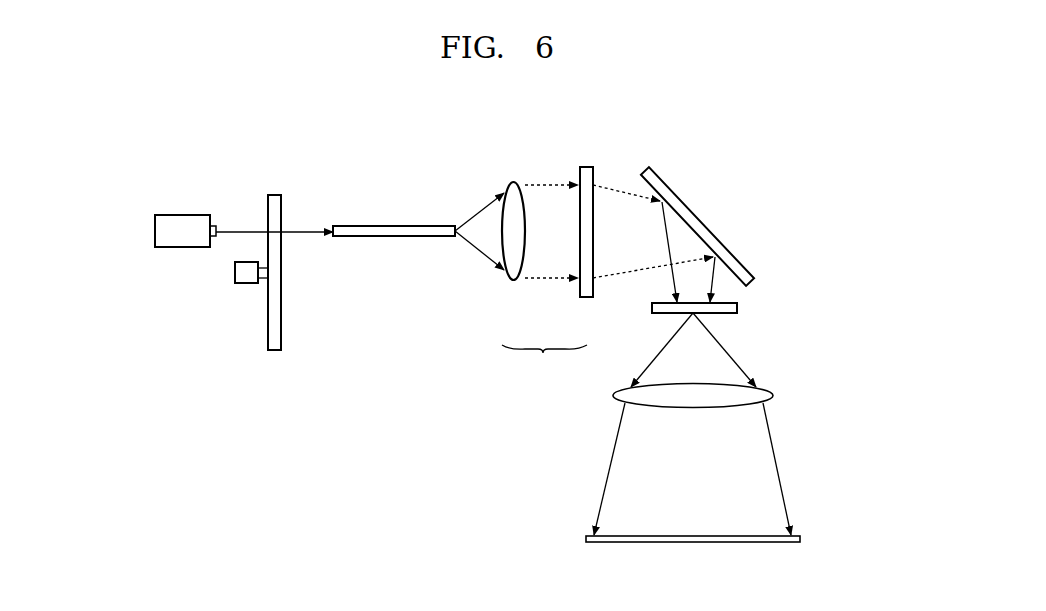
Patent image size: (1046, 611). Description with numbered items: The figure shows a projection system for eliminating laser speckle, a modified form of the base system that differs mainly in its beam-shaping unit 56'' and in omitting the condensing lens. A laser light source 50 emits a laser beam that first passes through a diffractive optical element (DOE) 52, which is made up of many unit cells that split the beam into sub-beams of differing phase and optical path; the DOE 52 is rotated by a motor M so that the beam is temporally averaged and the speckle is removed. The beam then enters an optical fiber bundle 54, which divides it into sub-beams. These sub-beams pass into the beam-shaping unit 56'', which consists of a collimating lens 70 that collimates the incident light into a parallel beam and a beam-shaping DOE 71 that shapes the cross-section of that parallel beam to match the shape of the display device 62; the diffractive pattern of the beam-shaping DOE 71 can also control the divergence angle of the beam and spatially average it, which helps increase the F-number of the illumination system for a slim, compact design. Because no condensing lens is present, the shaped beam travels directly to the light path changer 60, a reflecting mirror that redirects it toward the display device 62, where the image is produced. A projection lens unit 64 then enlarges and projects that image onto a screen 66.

The laser light source 50 is at (190, 215).
The diffractive optical element (DOE) 52 is at (275, 195).
The motor M is at (243, 284).
The optical fiber bundle 54 is at (396, 226).
The collimating lens 70 is at (512, 282).
The beam-shaping DOE 71 is at (585, 297).
The beam-shaping unit 56'' is at (544, 362).
The light path changer 60 is at (693, 213).
The display device 62 is at (740, 308).
The projection lens unit 64 is at (613, 396).
The screen 66 is at (585, 540).